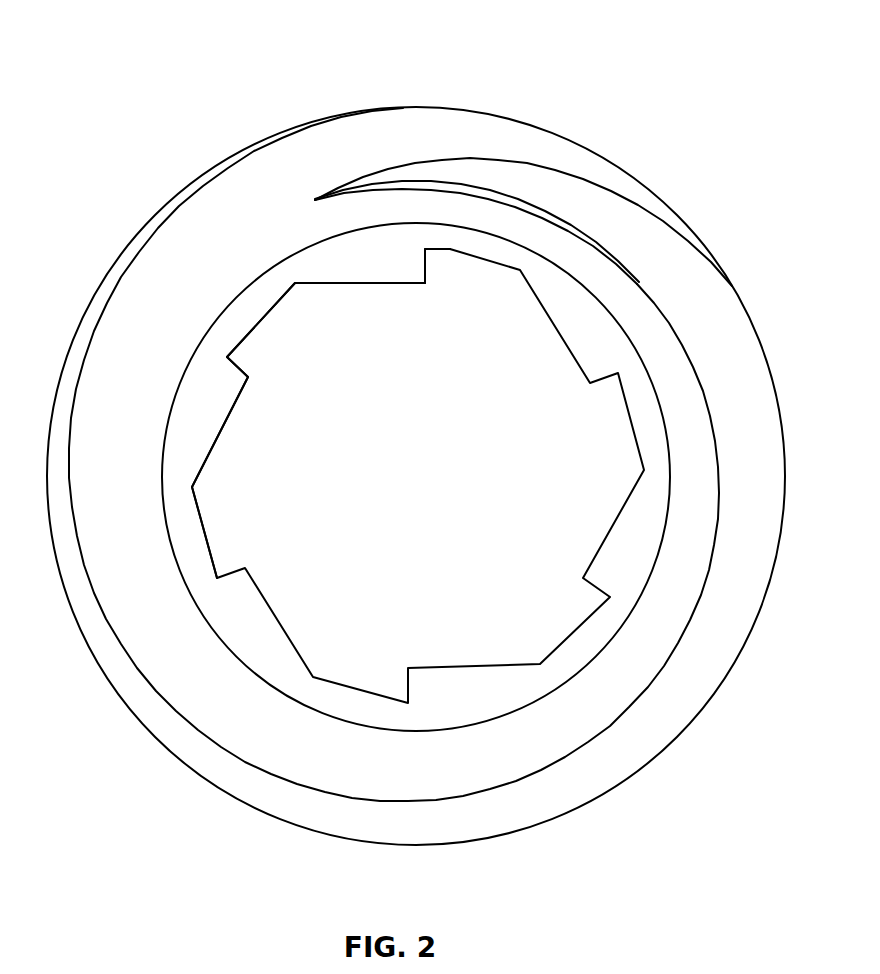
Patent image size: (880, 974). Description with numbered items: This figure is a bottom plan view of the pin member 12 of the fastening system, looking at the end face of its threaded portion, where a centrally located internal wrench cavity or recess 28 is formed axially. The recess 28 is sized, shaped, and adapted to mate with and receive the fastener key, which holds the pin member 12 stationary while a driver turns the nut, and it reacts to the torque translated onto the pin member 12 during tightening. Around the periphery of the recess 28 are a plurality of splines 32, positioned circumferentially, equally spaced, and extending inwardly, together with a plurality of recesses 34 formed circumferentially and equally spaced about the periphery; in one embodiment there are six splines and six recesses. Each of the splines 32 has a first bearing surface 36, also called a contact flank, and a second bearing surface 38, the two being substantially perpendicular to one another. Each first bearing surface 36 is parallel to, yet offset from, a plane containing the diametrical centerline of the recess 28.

The pin member 12 is at (156, 50).
The recess 28 is at (300, 533).
The splines 32 is at (395, 263).
The recesses 34 is at (258, 320).
The first bearing surface 36 is at (427, 263).
The second bearing surface 38 is at (405, 283).